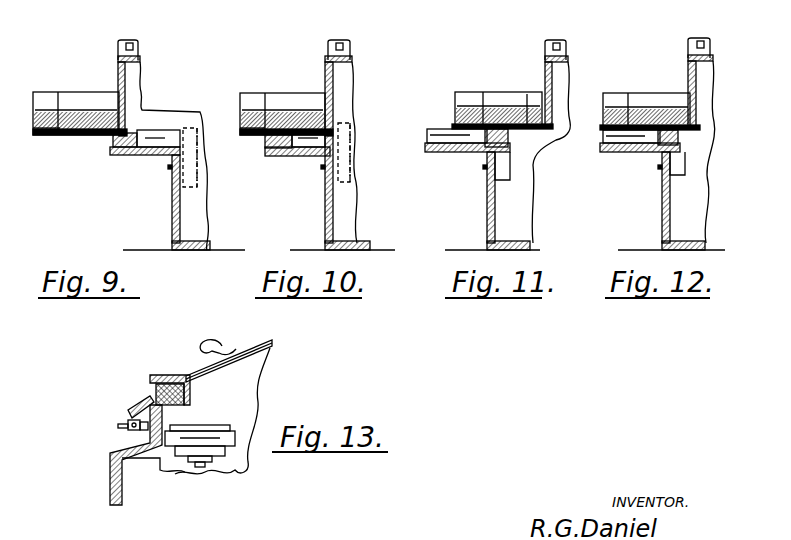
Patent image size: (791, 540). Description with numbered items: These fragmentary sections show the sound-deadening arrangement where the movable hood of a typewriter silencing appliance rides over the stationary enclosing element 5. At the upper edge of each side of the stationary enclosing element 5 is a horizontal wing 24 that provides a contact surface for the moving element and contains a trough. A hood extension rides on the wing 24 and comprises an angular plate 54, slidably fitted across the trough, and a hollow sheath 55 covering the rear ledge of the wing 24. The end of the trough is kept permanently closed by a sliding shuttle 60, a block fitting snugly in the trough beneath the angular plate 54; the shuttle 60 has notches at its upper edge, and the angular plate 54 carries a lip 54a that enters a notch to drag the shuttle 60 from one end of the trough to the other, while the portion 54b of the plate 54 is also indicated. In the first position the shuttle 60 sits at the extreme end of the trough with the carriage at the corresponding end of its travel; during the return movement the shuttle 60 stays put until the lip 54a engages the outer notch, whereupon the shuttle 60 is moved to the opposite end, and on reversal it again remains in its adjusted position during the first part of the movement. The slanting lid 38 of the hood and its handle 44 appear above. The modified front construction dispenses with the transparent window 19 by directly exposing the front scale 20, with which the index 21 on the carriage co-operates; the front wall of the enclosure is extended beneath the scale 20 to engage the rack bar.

In FIG. 9, the stationary enclosing element 5 is at (172, 207).
In FIG. 10, the stationary enclosing element 5 is at (325, 207).
In FIG. 11, the stationary enclosing element 5 is at (487, 212).
In FIG. 12, the stationary enclosing element 5 is at (662, 214).
In FIG. 13, the transparent window 19 is at (150, 398).
In FIG. 13, the front scale 20 is at (148, 401).
In FIG. 13, the index 21 is at (140, 410).
In FIG. 9, the horizontal wing 24 is at (145, 156).
In FIG. 10, the horizontal wing 24 is at (300, 158).
In FIG. 11, the horizontal wing 24 is at (445, 153).
In FIG. 12, the horizontal wing 24 is at (605, 153).
In FIG. 9, the slanting lid 38 is at (119, 42).
In FIG. 10, the slanting lid 38 is at (330, 43).
In FIG. 11, the slanting lid 38 is at (549, 42).
In FIG. 12, the slanting lid 38 is at (692, 40).
In FIG. 13, the slanting lid 38 is at (272, 347).
In FIG. 13, the handle 44 is at (224, 346).
In FIG. 9, the angular plate 54 is at (75, 136).
In FIG. 10, the angular plate 54 is at (282, 132).
In FIG. 11, the angular plate 54 is at (530, 130).
In FIG. 12, the angular plate 54 is at (650, 127).
In FIG. 9, the lip 54a is at (60, 134).
In FIG. 10, the lip 54a is at (265, 131).
In FIG. 11, the lip 54a is at (485, 140).
In FIG. 12, the lip 54a is at (636, 137).
In FIG. 9, the plate attaching end 54b is at (130, 132).
In FIG. 10, the plate attaching end 54b is at (335, 131).
In FIG. 11, the plate attaching end 54b is at (553, 129).
In FIG. 12, the plate attaching end 54b is at (700, 131).
In FIG. 9, the hollow sheath 55 is at (82, 100).
In FIG. 10, the hollow sheath 55 is at (288, 101).
In FIG. 11, the hollow sheath 55 is at (500, 102).
In FIG. 12, the hollow sheath 55 is at (648, 101).
In FIG. 9, the sliding shuttle 60 is at (113, 143).
In FIG. 10, the sliding shuttle 60 is at (268, 142).
In FIG. 11, the sliding shuttle 60 is at (505, 146).
In FIG. 12, the sliding shuttle 60 is at (660, 150).